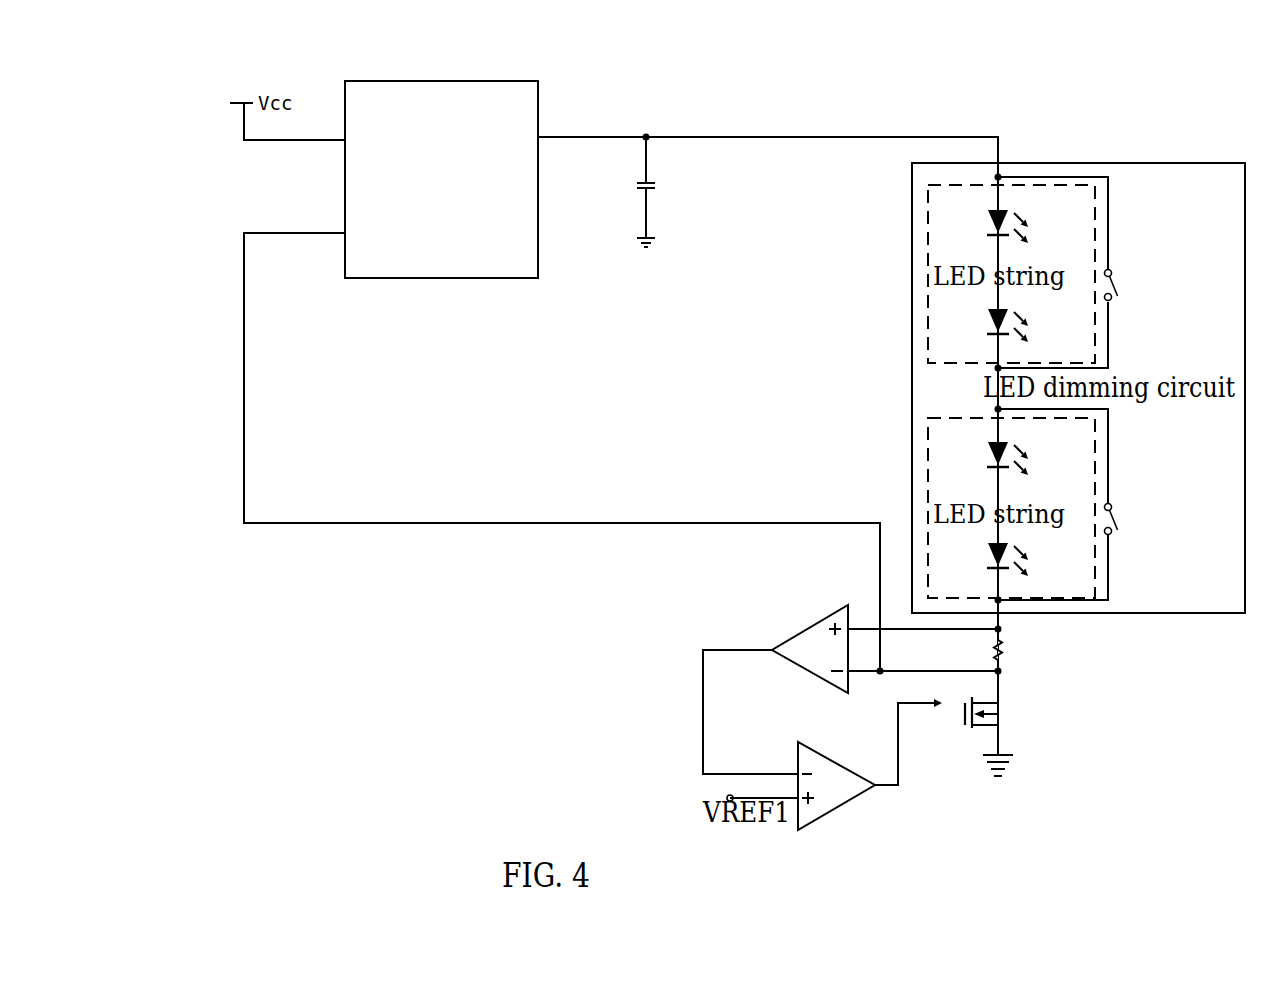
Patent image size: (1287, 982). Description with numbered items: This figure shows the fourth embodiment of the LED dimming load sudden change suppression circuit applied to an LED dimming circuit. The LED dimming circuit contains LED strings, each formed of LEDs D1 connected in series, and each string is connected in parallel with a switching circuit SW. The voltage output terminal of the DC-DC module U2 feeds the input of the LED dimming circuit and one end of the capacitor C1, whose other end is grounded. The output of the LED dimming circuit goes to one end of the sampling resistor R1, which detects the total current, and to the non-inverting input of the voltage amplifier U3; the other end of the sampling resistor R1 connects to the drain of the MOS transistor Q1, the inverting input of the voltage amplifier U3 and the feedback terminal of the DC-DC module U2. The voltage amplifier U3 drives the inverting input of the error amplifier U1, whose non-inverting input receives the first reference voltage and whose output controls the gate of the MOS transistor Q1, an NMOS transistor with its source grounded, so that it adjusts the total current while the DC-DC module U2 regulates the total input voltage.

The DC-DC module U2 is at (441, 164).
The capacitor C1 is at (662, 192).
The LED D1 is at (1028, 394).
The switching circuit SW is at (1080, 388).
The sampling resistor R1 is at (1021, 651).
The MOS transistor Q1 is at (1006, 736).
The voltage amplifier U3 is at (810, 650).
The error amplifier U1 is at (836, 781).